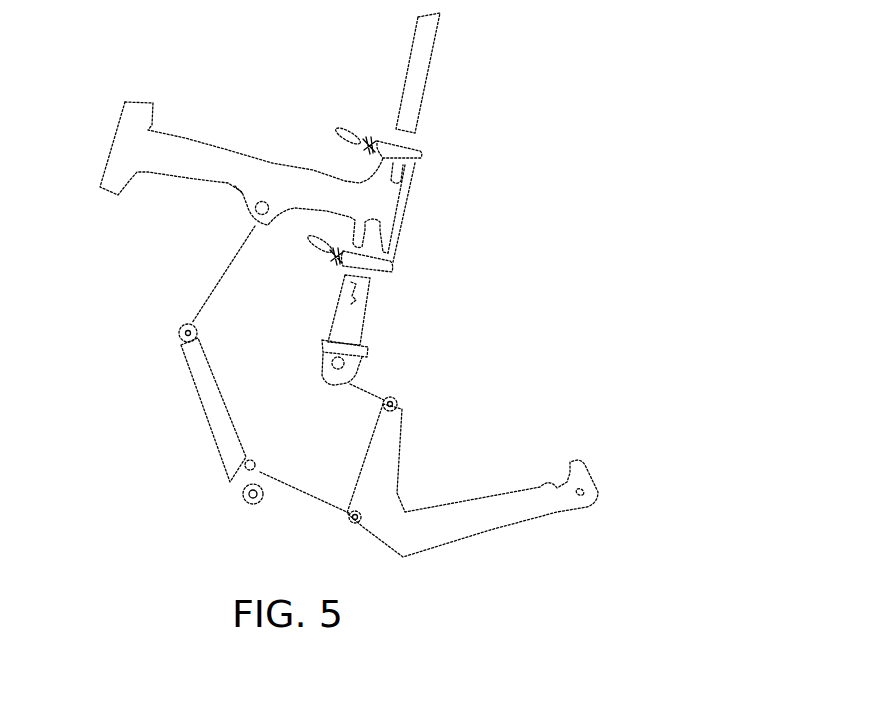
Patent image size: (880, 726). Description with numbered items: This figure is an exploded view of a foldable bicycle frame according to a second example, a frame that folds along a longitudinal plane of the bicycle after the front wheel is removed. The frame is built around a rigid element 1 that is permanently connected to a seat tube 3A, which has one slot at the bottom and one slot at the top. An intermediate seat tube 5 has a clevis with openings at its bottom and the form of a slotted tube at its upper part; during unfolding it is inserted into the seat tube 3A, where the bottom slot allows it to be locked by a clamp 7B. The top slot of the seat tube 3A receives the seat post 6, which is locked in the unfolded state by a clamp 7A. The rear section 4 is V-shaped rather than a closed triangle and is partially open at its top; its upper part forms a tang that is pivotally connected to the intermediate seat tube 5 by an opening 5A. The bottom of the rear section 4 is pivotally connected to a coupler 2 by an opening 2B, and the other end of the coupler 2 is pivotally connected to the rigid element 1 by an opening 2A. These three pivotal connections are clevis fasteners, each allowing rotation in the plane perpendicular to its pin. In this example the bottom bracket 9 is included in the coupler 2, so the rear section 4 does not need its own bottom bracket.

The rigid element 1 is at (237, 148).
The coupler 2 is at (188, 361).
The opening 2A is at (185, 333).
The opening 2B is at (245, 465).
The seat tube 3A is at (402, 218).
The rear section 4 is at (444, 488).
The intermediate seat tube 5 is at (363, 315).
The opening 5A is at (395, 403).
The seat post 6 is at (425, 83).
The clamp 7A is at (423, 157).
The clamp 7B is at (390, 268).
The bottom bracket 9 is at (252, 493).